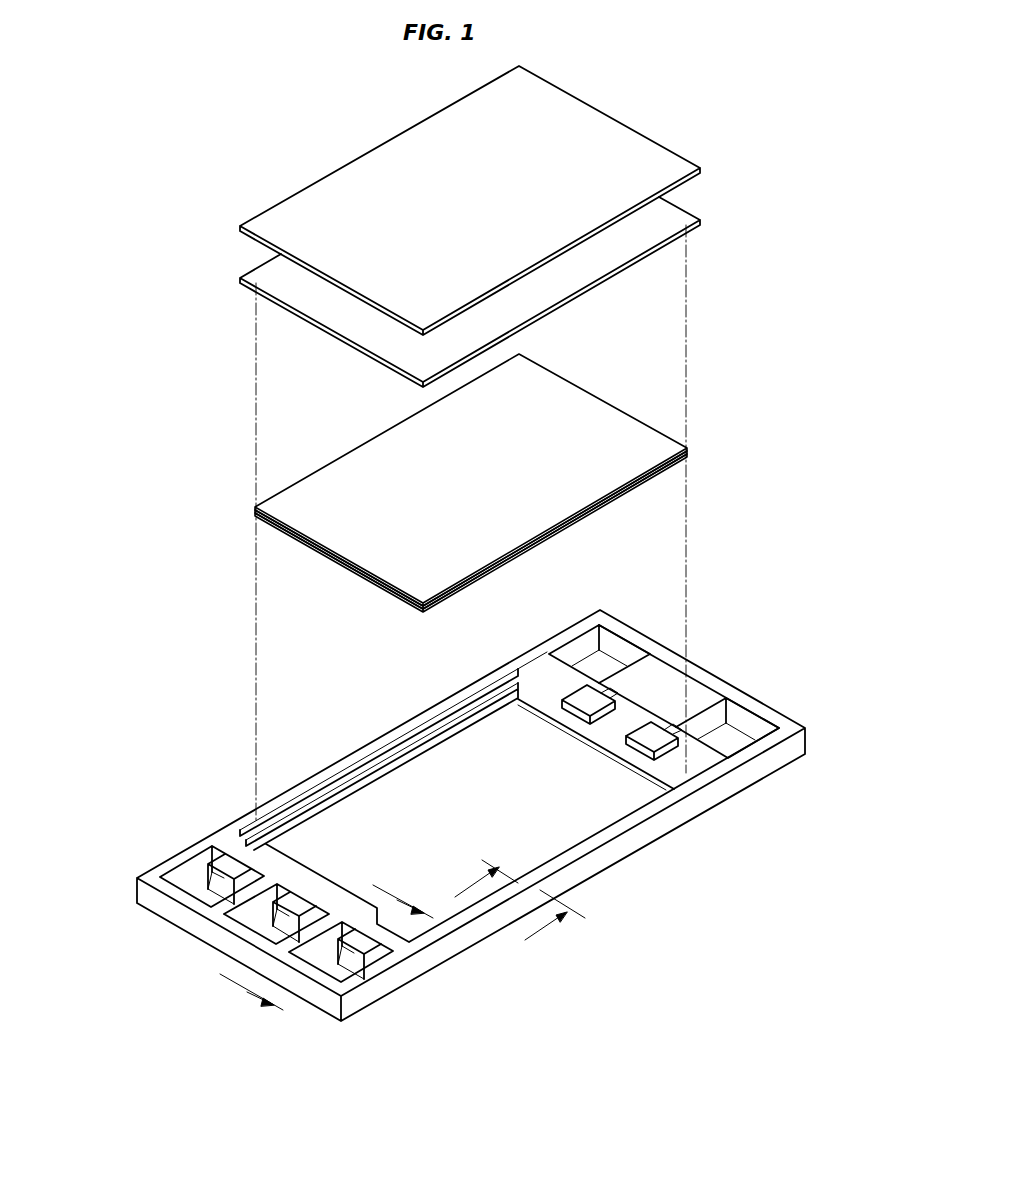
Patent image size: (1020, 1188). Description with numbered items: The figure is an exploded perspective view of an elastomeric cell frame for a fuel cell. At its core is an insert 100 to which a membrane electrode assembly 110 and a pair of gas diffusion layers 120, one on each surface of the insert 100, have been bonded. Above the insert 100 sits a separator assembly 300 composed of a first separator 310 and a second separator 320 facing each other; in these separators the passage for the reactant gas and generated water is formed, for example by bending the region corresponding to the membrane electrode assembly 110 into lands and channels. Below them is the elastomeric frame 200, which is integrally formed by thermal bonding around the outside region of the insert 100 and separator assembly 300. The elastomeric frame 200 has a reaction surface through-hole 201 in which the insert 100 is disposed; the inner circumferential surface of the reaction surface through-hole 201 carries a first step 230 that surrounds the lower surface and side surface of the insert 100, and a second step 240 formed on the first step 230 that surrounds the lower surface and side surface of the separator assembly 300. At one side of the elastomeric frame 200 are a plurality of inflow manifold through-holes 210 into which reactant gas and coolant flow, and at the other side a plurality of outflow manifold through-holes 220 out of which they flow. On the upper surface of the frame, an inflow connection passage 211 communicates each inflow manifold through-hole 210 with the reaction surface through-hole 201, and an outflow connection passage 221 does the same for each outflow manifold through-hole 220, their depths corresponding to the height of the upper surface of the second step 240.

The insert 100 is at (134, 468).
The membrane electrode assembly 110 is at (257, 512).
The gas diffusion layers 120 is at (255, 507).
The elastomeric frame 200 is at (228, 803).
The reaction surface through-hole 201 is at (565, 811).
The inflow manifold through-holes 210 is at (272, 925).
The inflow connection passage 211 is at (254, 855).
The outflow manifold through-holes 220 is at (667, 696).
The outflow connection passage 221 is at (614, 660).
The first step 230 is at (457, 742).
The second step 240 is at (380, 767).
The separator assembly 300 is at (140, 172).
The first separator 310 is at (263, 279).
The second separator 320 is at (265, 222).